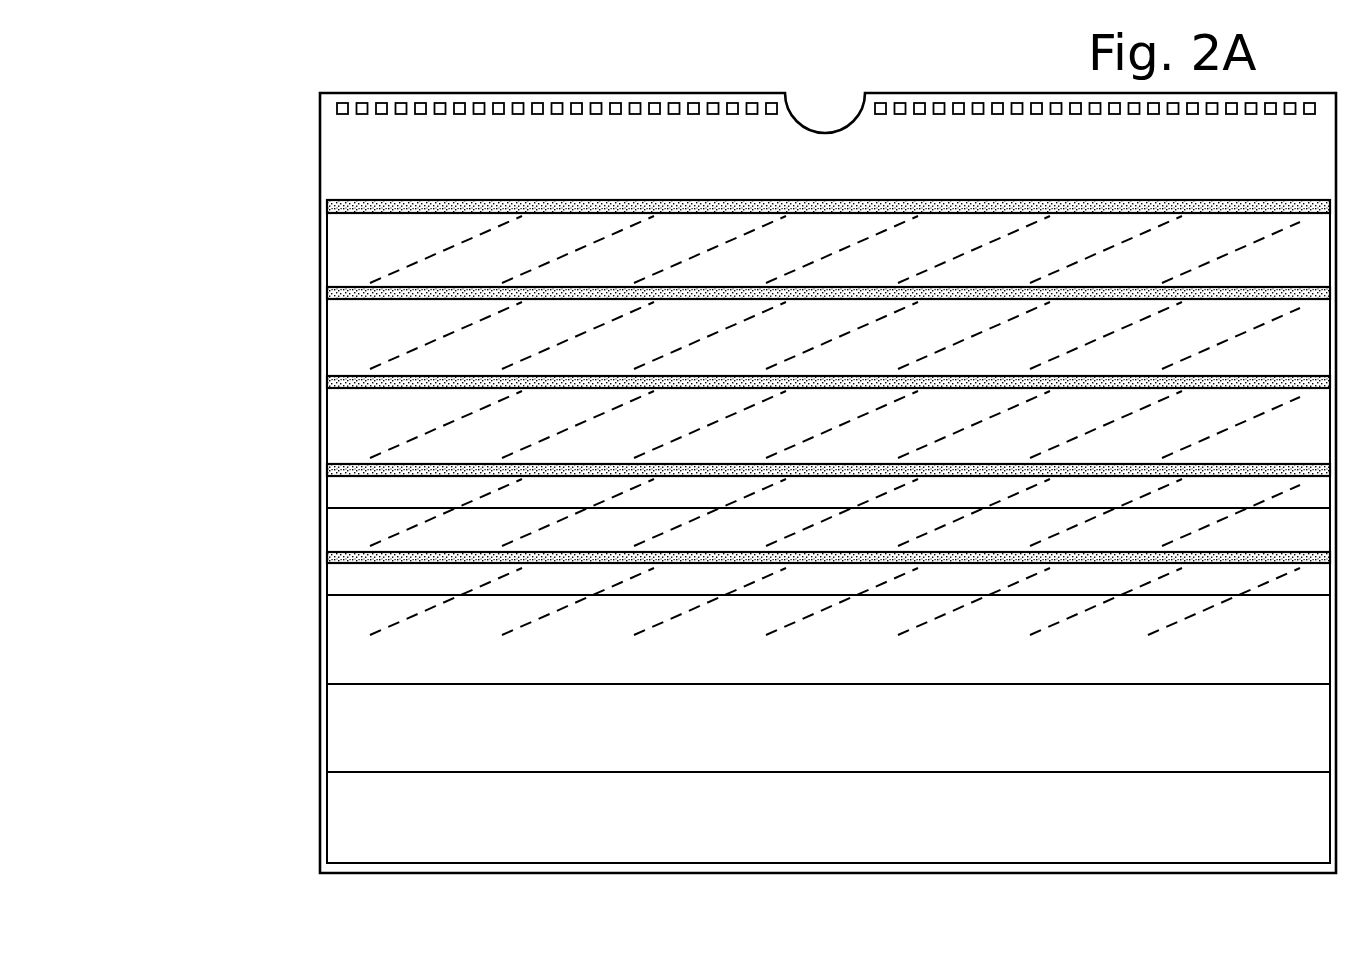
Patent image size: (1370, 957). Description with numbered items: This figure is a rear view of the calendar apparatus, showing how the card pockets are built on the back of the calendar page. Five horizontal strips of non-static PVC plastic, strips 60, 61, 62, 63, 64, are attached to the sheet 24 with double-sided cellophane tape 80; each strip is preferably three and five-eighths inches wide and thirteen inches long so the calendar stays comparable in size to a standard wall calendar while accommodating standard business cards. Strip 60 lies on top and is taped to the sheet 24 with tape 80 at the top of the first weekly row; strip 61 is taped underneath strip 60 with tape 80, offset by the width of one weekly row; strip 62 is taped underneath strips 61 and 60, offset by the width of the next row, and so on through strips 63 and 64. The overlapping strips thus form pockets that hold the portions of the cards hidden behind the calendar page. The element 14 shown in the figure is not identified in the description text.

The fiber / dashed reinforcing strand 14 is at (1208, 253).
The sheet 24 is at (1320, 152).
The strip 60 is at (302, 203).
The strip 61 is at (302, 290).
The strip 62 is at (302, 378).
The strip 63 is at (302, 466).
The strip 64 is at (302, 554).
The double-sided tape 80 is at (868, 205).